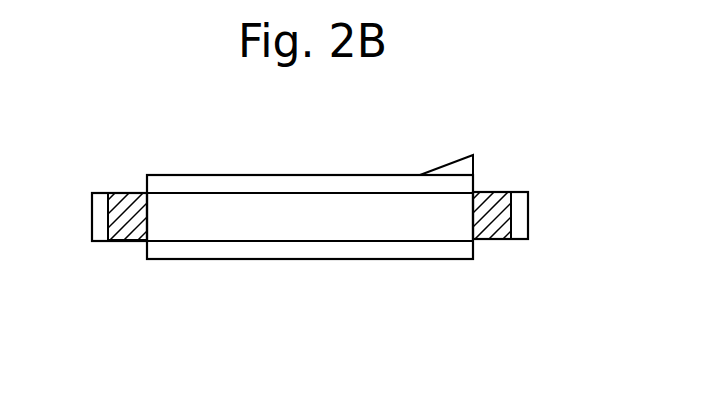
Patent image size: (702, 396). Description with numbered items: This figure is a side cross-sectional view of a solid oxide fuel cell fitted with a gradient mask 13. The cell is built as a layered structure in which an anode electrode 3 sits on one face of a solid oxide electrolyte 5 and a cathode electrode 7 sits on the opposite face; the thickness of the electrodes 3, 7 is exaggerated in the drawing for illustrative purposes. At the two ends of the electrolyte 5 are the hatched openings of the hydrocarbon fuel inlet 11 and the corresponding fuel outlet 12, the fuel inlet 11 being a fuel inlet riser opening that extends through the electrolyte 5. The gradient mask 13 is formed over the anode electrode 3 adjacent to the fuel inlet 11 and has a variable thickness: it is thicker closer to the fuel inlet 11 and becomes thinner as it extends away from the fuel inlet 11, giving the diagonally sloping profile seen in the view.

The anode electrode 3 is at (147, 183).
The solid oxide electrolyte 5 is at (92, 221).
The cathode electrode 7 is at (310, 250).
The fuel inlet 11 is at (500, 240).
The fuel outlet 12 is at (120, 240).
The gradient mask 13 is at (474, 162).